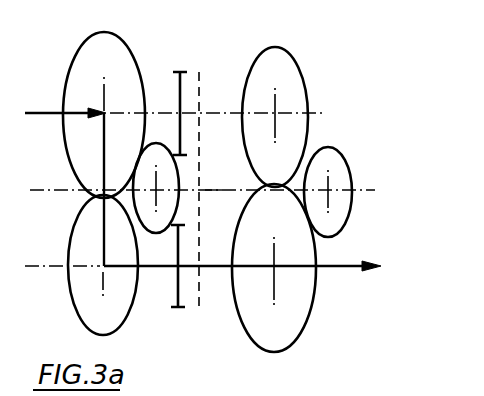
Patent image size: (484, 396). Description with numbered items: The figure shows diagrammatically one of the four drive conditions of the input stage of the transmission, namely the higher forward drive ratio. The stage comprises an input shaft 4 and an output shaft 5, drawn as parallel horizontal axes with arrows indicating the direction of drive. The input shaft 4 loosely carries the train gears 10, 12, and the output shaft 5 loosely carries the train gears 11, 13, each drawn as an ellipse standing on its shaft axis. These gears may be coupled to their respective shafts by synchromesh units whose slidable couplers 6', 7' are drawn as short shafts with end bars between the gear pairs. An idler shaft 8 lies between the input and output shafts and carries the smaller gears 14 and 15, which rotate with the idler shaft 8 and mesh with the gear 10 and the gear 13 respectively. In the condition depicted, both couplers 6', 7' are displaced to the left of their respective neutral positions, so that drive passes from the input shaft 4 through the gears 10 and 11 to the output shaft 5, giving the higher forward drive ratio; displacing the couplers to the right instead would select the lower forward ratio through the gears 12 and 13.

The input shaft 4 is at (51, 109).
The output shaft 5 is at (344, 275).
The slidable coupler 6' is at (189, 91).
The slidable coupler 7' is at (193, 290).
The idler shaft 8 is at (212, 187).
The train gear 10 is at (126, 51).
The train gear 11 is at (75, 224).
The train gear 12 is at (247, 68).
The train gear 13 is at (302, 292).
The idler gear 14 is at (180, 200).
The idler gear 15 is at (345, 183).